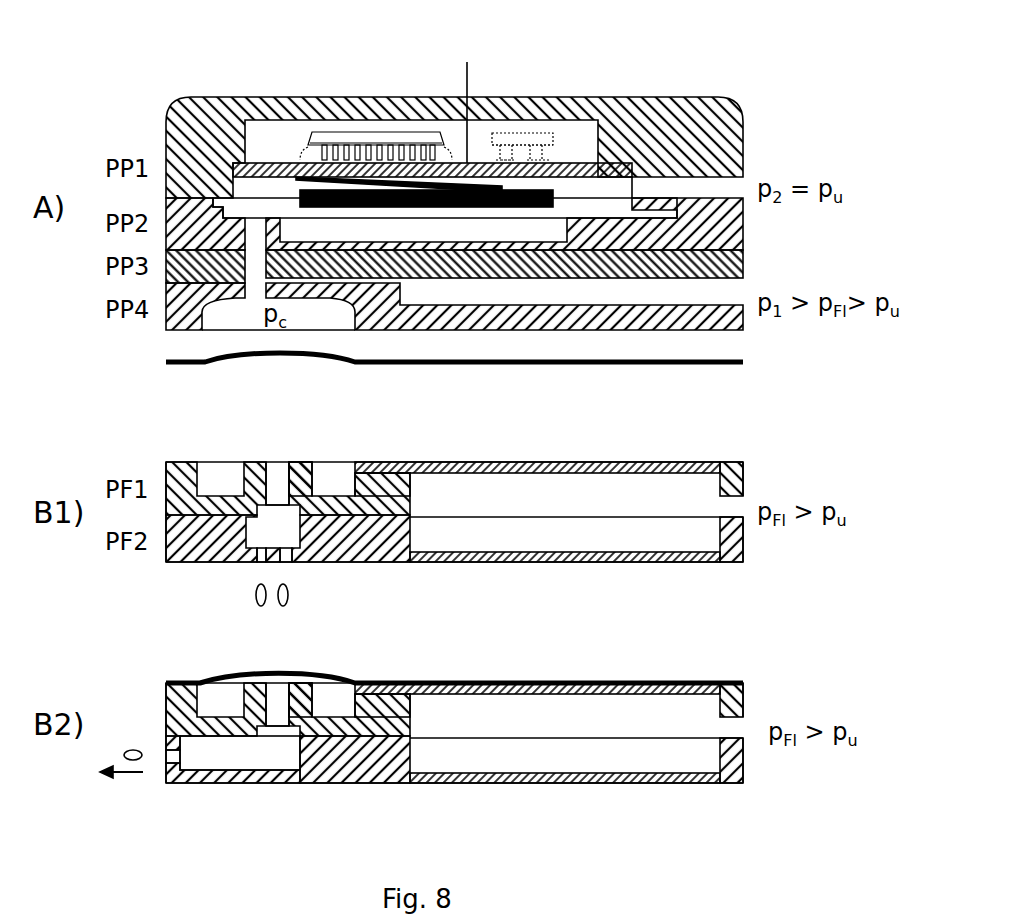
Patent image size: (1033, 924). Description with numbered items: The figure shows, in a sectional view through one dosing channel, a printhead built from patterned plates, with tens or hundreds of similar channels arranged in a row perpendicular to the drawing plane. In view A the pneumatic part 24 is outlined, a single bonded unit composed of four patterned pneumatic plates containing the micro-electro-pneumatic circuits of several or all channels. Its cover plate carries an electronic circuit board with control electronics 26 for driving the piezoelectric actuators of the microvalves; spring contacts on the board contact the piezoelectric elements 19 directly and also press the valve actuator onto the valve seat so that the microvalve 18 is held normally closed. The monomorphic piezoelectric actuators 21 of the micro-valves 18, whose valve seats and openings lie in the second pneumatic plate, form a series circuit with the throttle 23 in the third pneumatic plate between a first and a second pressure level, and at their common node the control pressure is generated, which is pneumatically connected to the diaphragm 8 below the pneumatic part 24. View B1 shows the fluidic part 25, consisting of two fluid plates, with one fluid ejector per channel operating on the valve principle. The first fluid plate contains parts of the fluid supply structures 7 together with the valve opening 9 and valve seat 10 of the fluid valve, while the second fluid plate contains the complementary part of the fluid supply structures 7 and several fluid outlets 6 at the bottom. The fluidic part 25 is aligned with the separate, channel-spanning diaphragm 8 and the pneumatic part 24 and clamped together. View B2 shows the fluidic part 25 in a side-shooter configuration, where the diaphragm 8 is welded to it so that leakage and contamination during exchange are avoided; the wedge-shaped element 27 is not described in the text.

The fluid outlet 6 is at (255, 556).
The fluid supply structure 7 is at (390, 484).
The diaphragm 8 is at (755, 362).
The valve opening 9 is at (277, 483).
The valve seat 10 is at (300, 462).
The microvalve 18 is at (300, 186).
The piezoelectric element 19 is at (587, 207).
The monomorphic piezoelectric actuator 21 is at (640, 175).
The throttle 23 is at (345, 282).
The pneumatic part 24 is at (743, 97).
The fluidic part 25 is at (742, 452).
The control electronics 26 is at (532, 152).
The connecting element 27 is at (505, 188).